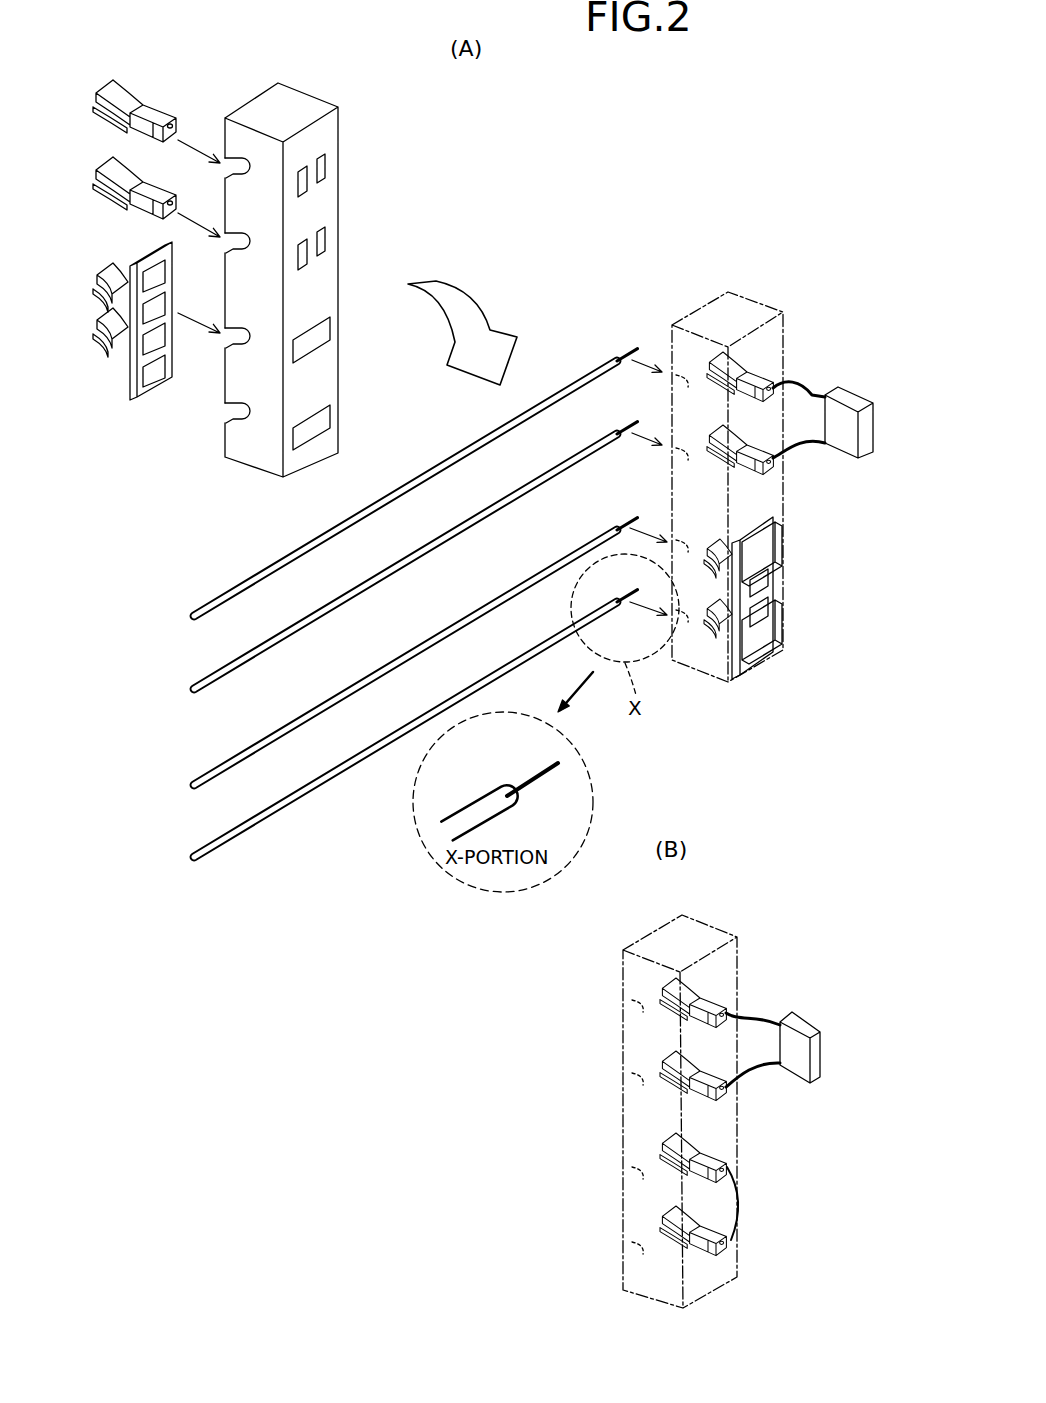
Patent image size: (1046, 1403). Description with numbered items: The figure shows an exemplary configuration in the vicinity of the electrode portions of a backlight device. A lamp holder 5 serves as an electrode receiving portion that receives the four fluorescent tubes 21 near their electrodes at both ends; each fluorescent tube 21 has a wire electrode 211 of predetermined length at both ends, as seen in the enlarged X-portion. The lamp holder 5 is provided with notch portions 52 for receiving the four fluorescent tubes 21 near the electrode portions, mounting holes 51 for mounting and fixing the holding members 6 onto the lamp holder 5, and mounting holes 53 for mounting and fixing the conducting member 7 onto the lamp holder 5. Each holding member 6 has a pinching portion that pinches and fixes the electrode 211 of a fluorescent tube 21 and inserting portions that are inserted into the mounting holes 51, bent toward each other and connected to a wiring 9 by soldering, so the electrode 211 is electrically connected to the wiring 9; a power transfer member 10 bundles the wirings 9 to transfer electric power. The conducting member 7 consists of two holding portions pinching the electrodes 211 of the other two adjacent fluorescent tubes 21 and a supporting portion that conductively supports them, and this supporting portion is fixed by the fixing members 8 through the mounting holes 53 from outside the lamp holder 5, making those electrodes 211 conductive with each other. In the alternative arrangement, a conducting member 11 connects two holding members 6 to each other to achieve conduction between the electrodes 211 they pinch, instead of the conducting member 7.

The lamp holder 5 is at (298, 105).
The mounting holes 51 is at (325, 173).
The notch portions 52 is at (228, 171).
The mounting holes 53 is at (313, 357).
The holding member 6 is at (111, 88).
The conducting member 7 is at (143, 250).
The fixing member 8 is at (770, 545).
The wiring 9 is at (813, 390).
The power transfer member 10 is at (850, 398).
The conducting member 11 is at (740, 1200).
The fluorescent tube 21 is at (258, 576).
The wire electrode 211 is at (623, 355).